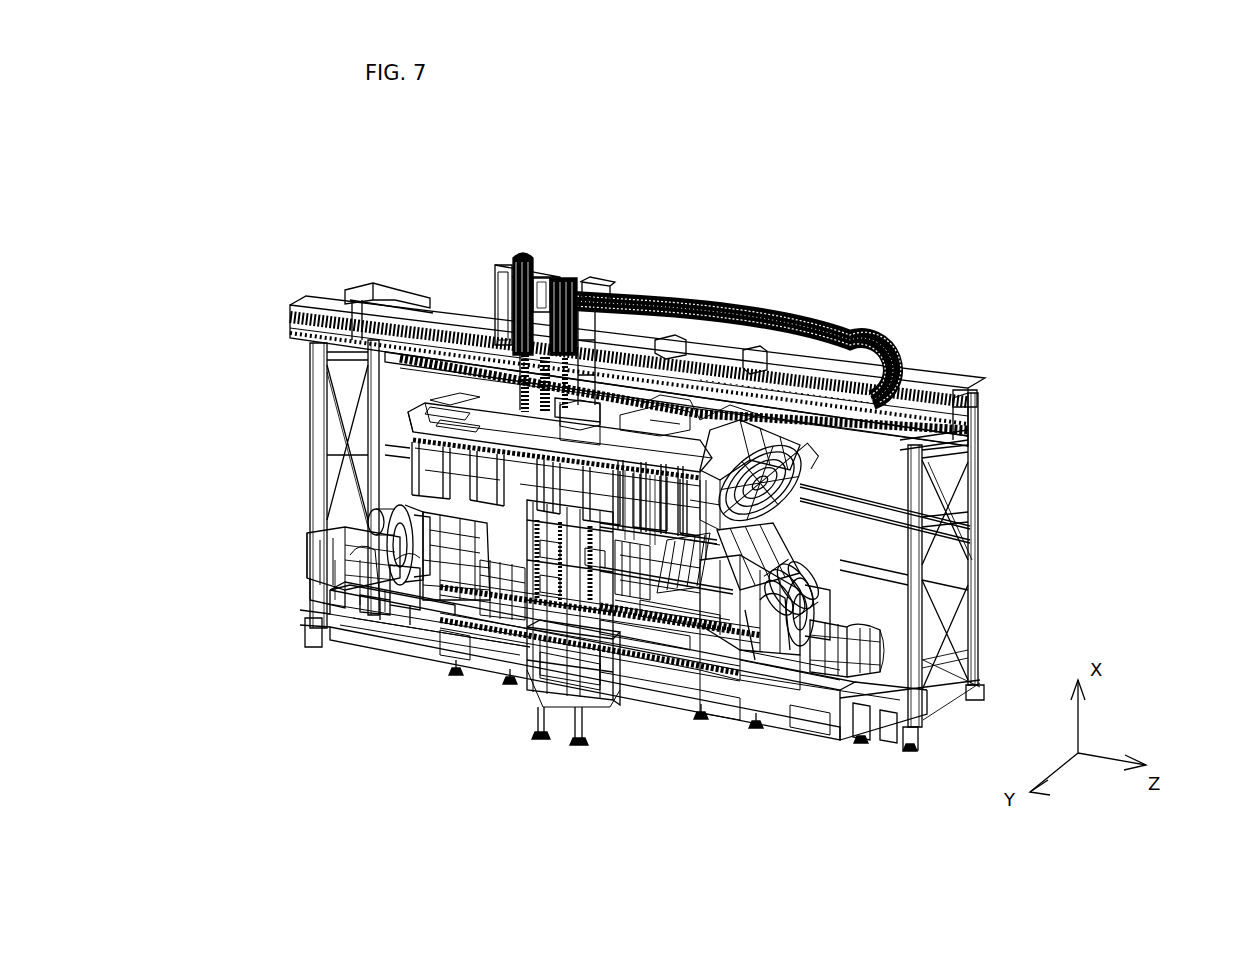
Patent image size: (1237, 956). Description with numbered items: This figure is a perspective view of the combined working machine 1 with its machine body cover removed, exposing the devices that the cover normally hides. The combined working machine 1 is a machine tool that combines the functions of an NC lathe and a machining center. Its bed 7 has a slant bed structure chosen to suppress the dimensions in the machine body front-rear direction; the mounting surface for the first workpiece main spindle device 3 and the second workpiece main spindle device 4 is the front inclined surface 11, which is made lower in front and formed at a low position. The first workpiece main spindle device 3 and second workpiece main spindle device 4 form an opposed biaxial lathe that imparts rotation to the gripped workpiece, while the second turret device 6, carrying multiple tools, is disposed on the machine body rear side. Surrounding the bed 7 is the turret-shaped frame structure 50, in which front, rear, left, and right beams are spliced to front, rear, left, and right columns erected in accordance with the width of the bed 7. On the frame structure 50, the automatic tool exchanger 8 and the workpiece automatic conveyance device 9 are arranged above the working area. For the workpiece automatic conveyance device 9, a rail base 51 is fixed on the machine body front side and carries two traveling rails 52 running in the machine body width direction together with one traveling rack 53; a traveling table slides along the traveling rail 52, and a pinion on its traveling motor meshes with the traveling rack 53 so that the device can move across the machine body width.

The combined working machine 1 is at (806, 214).
The first workpiece main spindle device 3 is at (400, 497).
The second workpiece main spindle device 4 is at (842, 607).
The second turret device 6 is at (802, 452).
The bed 7 is at (428, 643).
The automatic tool exchanger 8 is at (481, 398).
The workpiece automatic conveyance device 9 is at (578, 288).
The front inclined surface 11 is at (641, 645).
The frame structure 50 is at (975, 522).
The rail base 51 is at (977, 440).
The traveling rail 52 is at (913, 393).
The traveling rack 53 is at (945, 393).